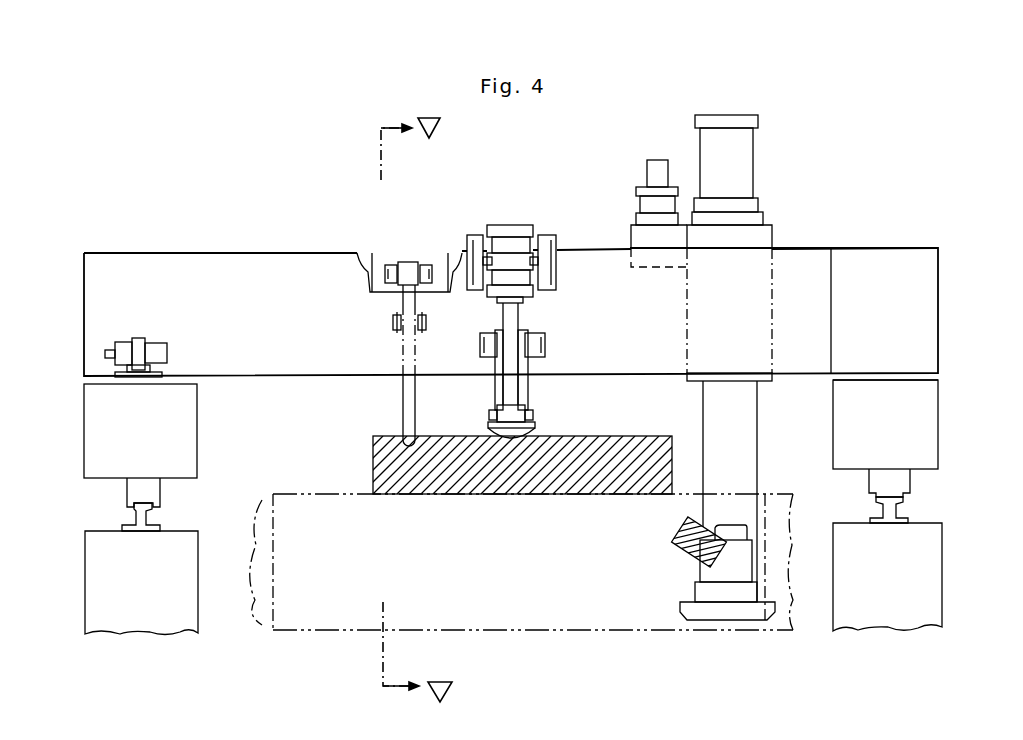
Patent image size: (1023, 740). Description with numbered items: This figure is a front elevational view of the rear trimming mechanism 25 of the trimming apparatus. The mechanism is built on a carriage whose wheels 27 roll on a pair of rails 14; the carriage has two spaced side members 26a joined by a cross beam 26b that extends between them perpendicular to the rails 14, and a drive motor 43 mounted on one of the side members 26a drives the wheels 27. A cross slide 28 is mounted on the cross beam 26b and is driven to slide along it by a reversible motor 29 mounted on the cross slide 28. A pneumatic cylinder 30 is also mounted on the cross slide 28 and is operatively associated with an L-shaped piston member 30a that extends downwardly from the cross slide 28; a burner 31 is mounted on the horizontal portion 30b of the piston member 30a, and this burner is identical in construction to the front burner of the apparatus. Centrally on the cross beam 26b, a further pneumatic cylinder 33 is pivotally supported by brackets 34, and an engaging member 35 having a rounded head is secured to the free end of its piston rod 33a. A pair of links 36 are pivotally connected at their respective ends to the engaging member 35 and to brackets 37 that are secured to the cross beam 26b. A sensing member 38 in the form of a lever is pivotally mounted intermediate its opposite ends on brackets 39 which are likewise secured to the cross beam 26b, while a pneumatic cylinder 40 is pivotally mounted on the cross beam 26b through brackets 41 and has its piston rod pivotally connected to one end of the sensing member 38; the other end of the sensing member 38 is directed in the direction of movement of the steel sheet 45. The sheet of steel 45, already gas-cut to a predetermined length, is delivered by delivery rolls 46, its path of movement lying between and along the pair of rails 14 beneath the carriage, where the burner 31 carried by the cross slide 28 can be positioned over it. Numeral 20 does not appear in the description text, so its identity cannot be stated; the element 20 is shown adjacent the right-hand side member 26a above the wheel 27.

The rails 14 is at (155, 525).
The carriage body 20 is at (925, 427).
The rear trimming mechanism 25 is at (830, 234).
The side members 26a is at (199, 436).
The cross beam 26b is at (275, 252).
The wheels 27 is at (162, 495).
The cross slide 28 is at (760, 235).
The reversible motor 29 is at (650, 172).
The pneumatic cylinder 30 is at (745, 160).
The L-shaped piston member 30a is at (760, 430).
The horizontal portion 30b is at (728, 620).
The burner 31 is at (676, 548).
The pneumatic cylinder 33 is at (513, 224).
The piston rod 33a is at (520, 315).
The brackets 34 is at (470, 240).
The engaging member 35 is at (536, 425).
The links 36 is at (495, 400).
The brackets 37 is at (484, 340).
The sensing member 38 is at (404, 413).
The brackets 39 is at (392, 321).
The pneumatic cylinder 40 is at (405, 265).
The brackets 41 is at (388, 268).
The drive motor 43 is at (121, 345).
The steel sheet 45 is at (650, 438).
The delivery rolls 46 is at (600, 632).